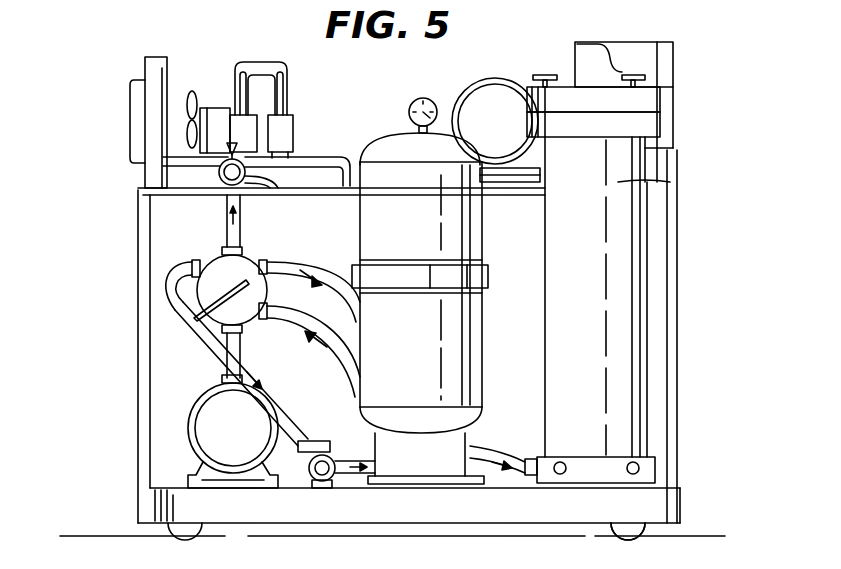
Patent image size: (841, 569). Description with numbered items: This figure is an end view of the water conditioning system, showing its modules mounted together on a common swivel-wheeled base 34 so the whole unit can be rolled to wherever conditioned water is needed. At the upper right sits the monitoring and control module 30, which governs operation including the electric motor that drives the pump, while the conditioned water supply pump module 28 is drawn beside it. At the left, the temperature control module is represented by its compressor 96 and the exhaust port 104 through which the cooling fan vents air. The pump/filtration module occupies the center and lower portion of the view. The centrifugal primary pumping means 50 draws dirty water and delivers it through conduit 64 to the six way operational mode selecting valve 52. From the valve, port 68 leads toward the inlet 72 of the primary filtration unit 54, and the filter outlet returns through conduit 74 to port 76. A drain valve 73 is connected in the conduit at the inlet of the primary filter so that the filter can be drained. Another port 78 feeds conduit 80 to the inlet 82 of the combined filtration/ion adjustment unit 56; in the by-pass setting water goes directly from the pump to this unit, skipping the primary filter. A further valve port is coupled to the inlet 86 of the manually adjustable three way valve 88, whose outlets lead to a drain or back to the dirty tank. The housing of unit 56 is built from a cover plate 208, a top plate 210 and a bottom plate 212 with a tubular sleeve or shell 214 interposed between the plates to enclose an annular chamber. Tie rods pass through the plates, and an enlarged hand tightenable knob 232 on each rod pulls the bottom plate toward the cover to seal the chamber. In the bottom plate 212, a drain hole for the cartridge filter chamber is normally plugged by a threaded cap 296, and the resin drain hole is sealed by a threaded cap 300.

The conditioned water supply pump module 28 is at (506, 135).
The monitoring and control module 30 is at (676, 63).
The swivel-wheeled base 34 is at (645, 527).
The primary pumping means 50 is at (252, 440).
The operational mode selecting valve 52 is at (213, 278).
The primary filtration unit 54 is at (430, 235).
The combined filtration/ion adjustment unit 56 is at (612, 238).
The conduit 64 is at (226, 372).
The port 68 is at (202, 252).
The inlet 72 is at (212, 334).
The drain valve 73 is at (326, 482).
The conduit 74 is at (330, 352).
The port 76 is at (264, 322).
The port 78 is at (254, 262).
The conduit 80 is at (340, 262).
The inlet 82 is at (532, 457).
The inlet 86 is at (240, 186).
The three way valve 88 is at (283, 190).
The compressor 96 is at (262, 70).
The exhaust port 104 is at (135, 133).
The cover plate 208 is at (648, 98).
The top plate 210 is at (650, 128).
The bottom plate 212 is at (622, 423).
The tubular sleeve or shell 214 is at (620, 182).
The hand tightenable knob 232 is at (560, 63).
The threaded cap 296 is at (566, 472).
The threaded cap 300 is at (630, 472).